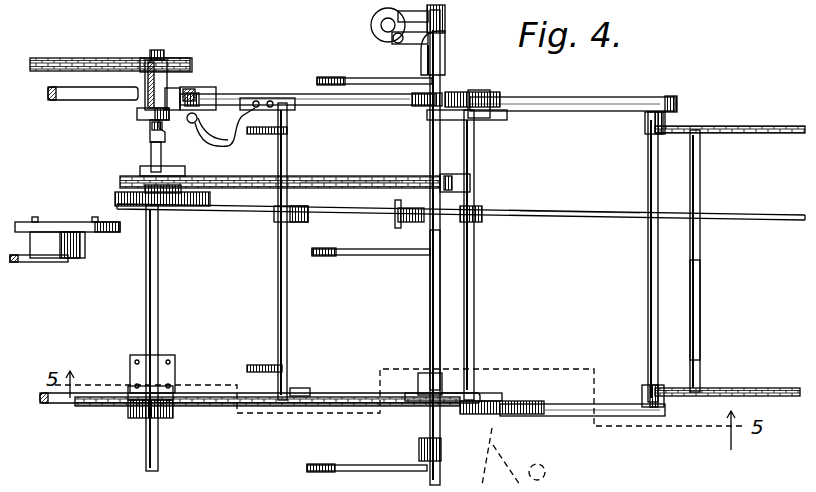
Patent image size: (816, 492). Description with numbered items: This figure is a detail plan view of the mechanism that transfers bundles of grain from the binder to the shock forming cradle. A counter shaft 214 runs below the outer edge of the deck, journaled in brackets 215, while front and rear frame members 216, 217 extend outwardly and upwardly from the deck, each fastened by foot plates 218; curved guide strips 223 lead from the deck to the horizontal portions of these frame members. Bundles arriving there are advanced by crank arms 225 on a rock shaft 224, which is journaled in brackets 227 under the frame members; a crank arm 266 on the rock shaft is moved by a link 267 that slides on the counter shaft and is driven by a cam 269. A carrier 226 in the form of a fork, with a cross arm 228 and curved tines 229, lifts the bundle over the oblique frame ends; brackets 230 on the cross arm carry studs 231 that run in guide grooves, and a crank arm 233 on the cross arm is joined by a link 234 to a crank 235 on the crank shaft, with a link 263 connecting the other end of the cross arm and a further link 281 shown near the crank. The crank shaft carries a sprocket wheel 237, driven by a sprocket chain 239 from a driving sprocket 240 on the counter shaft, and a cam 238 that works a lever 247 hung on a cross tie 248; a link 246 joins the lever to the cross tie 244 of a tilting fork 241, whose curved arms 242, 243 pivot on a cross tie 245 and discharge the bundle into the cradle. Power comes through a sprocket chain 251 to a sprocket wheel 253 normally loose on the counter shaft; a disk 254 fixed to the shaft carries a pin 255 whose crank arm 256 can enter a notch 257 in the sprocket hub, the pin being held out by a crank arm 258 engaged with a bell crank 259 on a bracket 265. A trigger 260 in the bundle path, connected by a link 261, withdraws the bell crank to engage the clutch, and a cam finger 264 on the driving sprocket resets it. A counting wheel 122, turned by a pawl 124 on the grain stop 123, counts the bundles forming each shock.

The counting wheel 122 is at (78, 250).
The grain stop 123 is at (97, 233).
The pawl 124 is at (54, 263).
The counter shaft 214 is at (159, 305).
The bracket 215 is at (173, 365).
The front frame member 216 is at (598, 98).
The rear frame member 217 is at (307, 408).
The foot plate 218 is at (172, 414).
The curved guide strip 223 is at (66, 100).
The rock shaft 224 is at (288, 318).
The crank arm 225 is at (262, 134).
The carrier 226 is at (405, 247).
The bracket 227 is at (298, 394).
The cross arm 228 is at (441, 307).
The curved tine 229 is at (350, 78).
The bracket 230 is at (470, 120).
The stud 231 is at (503, 94).
The crank arm 233 is at (406, 46).
The link 234 is at (371, 22).
The crank 235 is at (446, 14).
The sprocket wheel 237 is at (432, 177).
The cam 238 is at (397, 214).
The sprocket chain 239 is at (332, 177).
The driving sprocket 240 is at (132, 177).
The tilting fork 241 is at (725, 310).
The curved arm 242 is at (750, 126).
The curved arm 243 is at (736, 386).
The cross tie 244 is at (701, 244).
The cross tie 245 is at (649, 178).
The link 246 is at (561, 213).
The lever 247 is at (483, 208).
The cross tie 248 is at (475, 265).
The sprocket chain 251 is at (66, 58).
The sprocket wheel 253 is at (142, 64).
The disk 254 is at (137, 114).
The pin 255 is at (157, 52).
The crank arm 256 is at (173, 96).
The notch 257 is at (167, 86).
The crank arm 258 is at (150, 130).
The bell crank 259 is at (226, 147).
The trigger 260 is at (256, 110).
The link 261 is at (248, 103).
The link 263 is at (419, 450).
The cam finger 264 is at (182, 205).
The bracket 265 is at (207, 93).
The crank arm 266 is at (300, 221).
The link 267 is at (249, 211).
The cam 269 is at (115, 199).
The elbow 281 is at (446, 68).